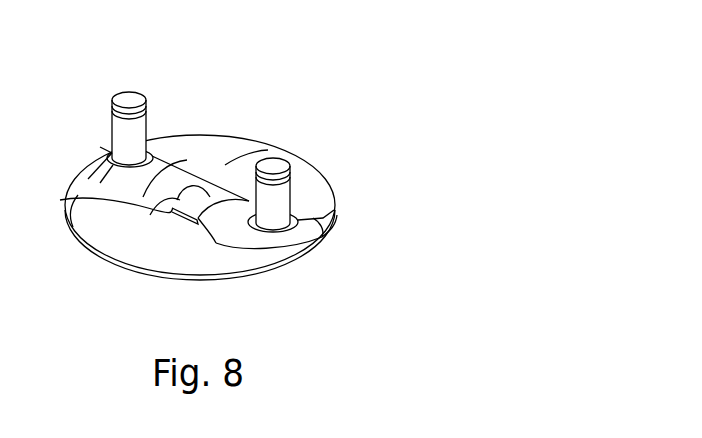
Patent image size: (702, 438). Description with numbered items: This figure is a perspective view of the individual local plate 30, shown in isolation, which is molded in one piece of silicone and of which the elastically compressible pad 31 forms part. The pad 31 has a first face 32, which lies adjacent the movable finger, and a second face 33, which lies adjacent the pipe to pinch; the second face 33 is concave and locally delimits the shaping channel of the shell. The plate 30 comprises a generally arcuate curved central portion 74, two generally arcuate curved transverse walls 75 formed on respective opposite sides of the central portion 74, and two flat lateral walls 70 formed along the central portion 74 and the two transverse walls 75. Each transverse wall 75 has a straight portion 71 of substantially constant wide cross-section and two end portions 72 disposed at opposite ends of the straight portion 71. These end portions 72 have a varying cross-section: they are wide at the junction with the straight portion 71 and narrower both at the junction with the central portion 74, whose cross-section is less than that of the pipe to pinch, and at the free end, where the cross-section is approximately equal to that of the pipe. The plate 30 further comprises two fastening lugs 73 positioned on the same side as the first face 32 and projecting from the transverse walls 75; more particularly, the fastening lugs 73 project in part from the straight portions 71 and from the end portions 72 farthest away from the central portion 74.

The individual local plate 30 is at (294, 75).
The pad 31 is at (148, 218).
The first face 32 is at (270, 140).
The second face 33 is at (320, 247).
The flat lateral walls 70 is at (237, 150).
The straight portion 71 is at (107, 183).
The end portions 72 is at (101, 160).
The fastening lugs 73 is at (128, 97).
The central portion 74 is at (192, 201).
The transverse walls 75 is at (84, 163).